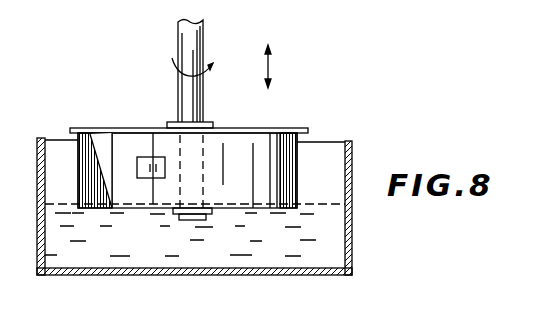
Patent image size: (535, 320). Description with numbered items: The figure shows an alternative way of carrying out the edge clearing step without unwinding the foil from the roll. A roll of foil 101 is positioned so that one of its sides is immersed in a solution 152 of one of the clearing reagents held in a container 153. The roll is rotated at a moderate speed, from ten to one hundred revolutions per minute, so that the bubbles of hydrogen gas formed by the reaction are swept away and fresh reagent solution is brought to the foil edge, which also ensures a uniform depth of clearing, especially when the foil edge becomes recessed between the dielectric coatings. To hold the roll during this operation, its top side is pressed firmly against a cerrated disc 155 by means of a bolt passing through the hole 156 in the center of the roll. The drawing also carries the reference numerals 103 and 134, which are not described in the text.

The roll of foil 101 is at (254, 160).
The nut 103 is at (253, 208).
The drive shaft 134 is at (198, 53).
The solution 152 is at (147, 243).
The container 153 is at (334, 275).
The cerrated disc 155 is at (113, 128).
The hole 156 is at (197, 158).